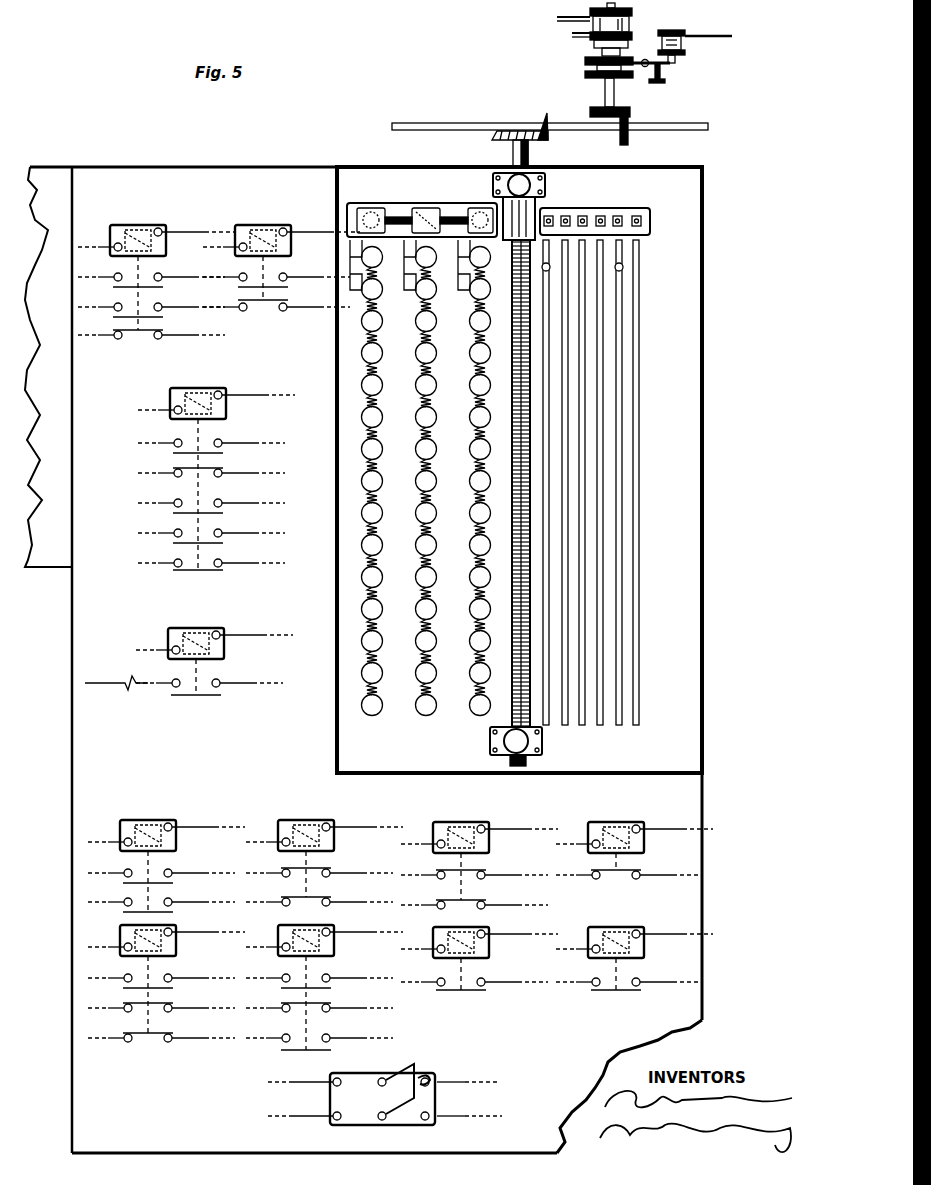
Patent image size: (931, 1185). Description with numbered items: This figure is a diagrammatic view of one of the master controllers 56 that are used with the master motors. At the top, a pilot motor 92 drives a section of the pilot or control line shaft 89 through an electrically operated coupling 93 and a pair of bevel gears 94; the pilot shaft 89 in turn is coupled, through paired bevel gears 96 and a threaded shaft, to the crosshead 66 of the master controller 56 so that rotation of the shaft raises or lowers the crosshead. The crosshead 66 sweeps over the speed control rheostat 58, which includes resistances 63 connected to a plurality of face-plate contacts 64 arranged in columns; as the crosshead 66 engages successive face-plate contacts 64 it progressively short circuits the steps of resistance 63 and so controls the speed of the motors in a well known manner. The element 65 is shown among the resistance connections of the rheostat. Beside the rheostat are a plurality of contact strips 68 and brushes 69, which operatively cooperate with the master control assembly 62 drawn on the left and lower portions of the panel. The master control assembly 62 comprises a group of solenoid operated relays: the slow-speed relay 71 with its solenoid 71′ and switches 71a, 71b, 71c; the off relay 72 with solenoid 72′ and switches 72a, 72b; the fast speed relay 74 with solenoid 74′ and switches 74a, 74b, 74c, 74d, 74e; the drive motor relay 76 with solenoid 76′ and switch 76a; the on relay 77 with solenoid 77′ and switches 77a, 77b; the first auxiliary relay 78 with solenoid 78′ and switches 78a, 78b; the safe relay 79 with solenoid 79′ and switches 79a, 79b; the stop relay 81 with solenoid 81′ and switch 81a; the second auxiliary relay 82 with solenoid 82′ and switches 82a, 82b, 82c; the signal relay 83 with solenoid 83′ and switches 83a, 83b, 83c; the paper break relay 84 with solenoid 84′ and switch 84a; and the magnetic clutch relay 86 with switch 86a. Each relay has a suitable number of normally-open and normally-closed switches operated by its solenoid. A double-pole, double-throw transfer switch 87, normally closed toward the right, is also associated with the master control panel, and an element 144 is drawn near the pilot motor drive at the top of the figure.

The master controller 56 is at (690, 740).
The speed control rheostat 58 is at (443, 260).
The master control assembly 62 is at (175, 741).
The resistances 63 is at (424, 491).
The face-plate contacts 64 is at (428, 349).
The spring connectors 65 is at (478, 402).
The crosshead 66 is at (352, 206).
The contact strips 68 is at (563, 542).
The brushes 69 is at (618, 212).
The slow-speed relay 71 is at (123, 224).
The solenoid of slow-speed relay 71′ is at (150, 231).
The switch of slow-speed relay 71a is at (156, 278).
The switch of slow-speed relay 71b is at (157, 306).
The switch of slow-speed relay 71c is at (150, 341).
The off relay 72 is at (249, 224).
The solenoid of off relay 72′ is at (277, 231).
The switch of off relay 72a is at (285, 278).
The switch of off relay 72b is at (287, 306).
The fast speed relay 74 is at (216, 387).
The solenoid of fast speed relay 74′ is at (176, 400).
The switch of fast speed relay 74a is at (222, 447).
The switch of fast speed relay 74b is at (222, 477).
The switch of fast speed relay 74c is at (222, 507).
The switch of fast speed relay 74d is at (222, 537).
The switch of fast speed relay 74e is at (222, 566).
The drive motor relay 76 is at (210, 627).
The solenoid of drive motor relay 76′ is at (224, 645).
The switch of drive motor relay 76a is at (221, 688).
The on relay 77 is at (157, 819).
The solenoid of on relay 77′ is at (124, 832).
The switch of on relay 77a is at (175, 873).
The switch of on relay 77b is at (175, 902).
The first auxiliary relay 78 is at (331, 819).
The solenoid of first auxiliary relay 78′ is at (298, 826).
The switch of first auxiliary relay 78a is at (333, 873).
The switch of first auxiliary relay 78b is at (333, 902).
The safe relay 79 is at (492, 821).
The solenoid of safe relay 79′ is at (443, 826).
The switch of safe relay 79a is at (488, 875).
The switch of safe relay 79b is at (488, 905).
The stop relay 81 is at (645, 821).
The solenoid of stop relay 81′ is at (600, 826).
The switch of stop relay 81a is at (643, 875).
The second auxiliary relay 82 is at (188, 930).
The solenoid of second auxiliary relay 82′ is at (124, 940).
The switch of second auxiliary relay 82a is at (176, 979).
The switch of second auxiliary relay 82b is at (176, 1008).
The switch of second auxiliary relay 82c is at (176, 1038).
The signal relay 83 is at (338, 935).
The solenoid of signal relay 83′ is at (282, 940).
The switch of signal relay 83a is at (333, 979).
The switch of signal relay 83b is at (333, 1008).
The switch of signal relay 83c is at (333, 1038).
The paper break relay 84 is at (497, 936).
The solenoid of paper break relay 84′ is at (487, 949).
The switch of paper break relay 84a is at (486, 985).
The magnetic clutch relay 86 is at (630, 927).
The switch of magnetic clutch relay 86a is at (641, 987).
The transfer switch 87 is at (370, 1100).
The pilot shaft 89 is at (412, 124).
The pilot motor 92 is at (600, 33).
The electrically operated coupling 93 is at (590, 66).
The bevel gears 94 is at (630, 112).
The bevel gears 96 is at (548, 137).
The solenoid 144 is at (684, 48).